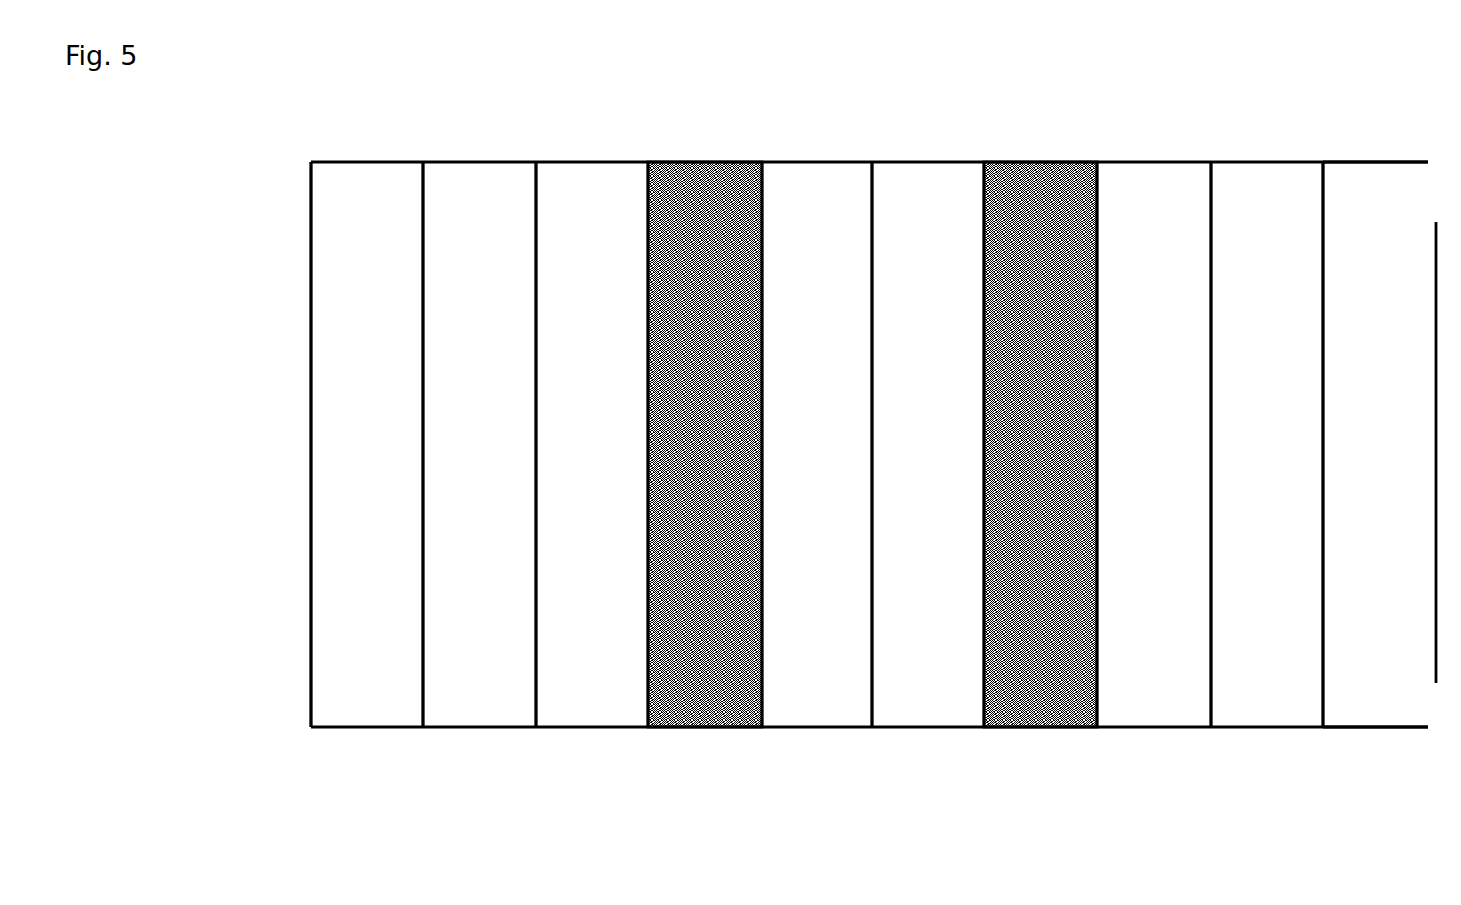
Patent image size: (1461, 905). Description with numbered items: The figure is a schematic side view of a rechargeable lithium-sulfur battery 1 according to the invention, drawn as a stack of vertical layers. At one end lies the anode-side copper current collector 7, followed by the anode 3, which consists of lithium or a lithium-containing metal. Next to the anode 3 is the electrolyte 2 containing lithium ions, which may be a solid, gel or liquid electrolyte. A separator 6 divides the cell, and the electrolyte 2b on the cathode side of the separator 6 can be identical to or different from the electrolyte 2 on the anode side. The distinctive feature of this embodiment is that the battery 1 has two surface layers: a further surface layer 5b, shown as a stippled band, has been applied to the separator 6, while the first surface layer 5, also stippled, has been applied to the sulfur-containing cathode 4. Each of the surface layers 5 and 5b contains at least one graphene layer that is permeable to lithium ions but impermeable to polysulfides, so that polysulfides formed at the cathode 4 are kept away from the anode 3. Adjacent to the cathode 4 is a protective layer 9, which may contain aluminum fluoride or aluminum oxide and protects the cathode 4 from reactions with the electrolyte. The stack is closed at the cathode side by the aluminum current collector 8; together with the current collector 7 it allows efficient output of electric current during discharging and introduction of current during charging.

The rechargeable lithium-sulfur battery 1 is at (292, 115).
The electrolyte 2 is at (592, 211).
The electrolyte 2b is at (926, 211).
The anode 3 is at (480, 211).
The cathode 4 is at (1266, 212).
The surface layer 5 is at (1041, 211).
The surface layer 5b is at (702, 207).
The separator 6 is at (818, 211).
The current collector 7 is at (368, 685).
The current collector 8 is at (1378, 685).
The protective layer 9 is at (1158, 687).